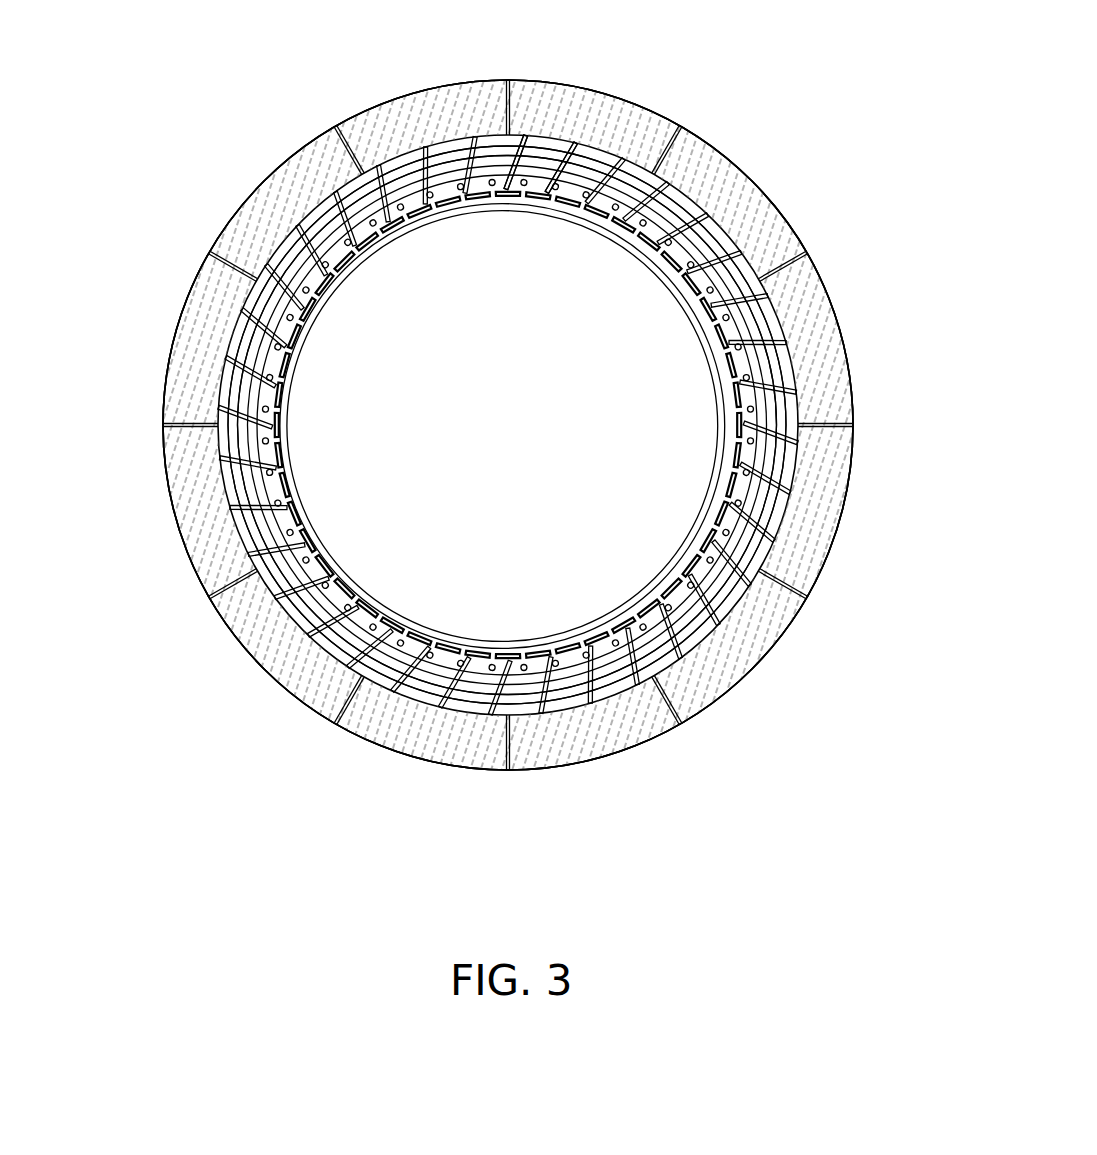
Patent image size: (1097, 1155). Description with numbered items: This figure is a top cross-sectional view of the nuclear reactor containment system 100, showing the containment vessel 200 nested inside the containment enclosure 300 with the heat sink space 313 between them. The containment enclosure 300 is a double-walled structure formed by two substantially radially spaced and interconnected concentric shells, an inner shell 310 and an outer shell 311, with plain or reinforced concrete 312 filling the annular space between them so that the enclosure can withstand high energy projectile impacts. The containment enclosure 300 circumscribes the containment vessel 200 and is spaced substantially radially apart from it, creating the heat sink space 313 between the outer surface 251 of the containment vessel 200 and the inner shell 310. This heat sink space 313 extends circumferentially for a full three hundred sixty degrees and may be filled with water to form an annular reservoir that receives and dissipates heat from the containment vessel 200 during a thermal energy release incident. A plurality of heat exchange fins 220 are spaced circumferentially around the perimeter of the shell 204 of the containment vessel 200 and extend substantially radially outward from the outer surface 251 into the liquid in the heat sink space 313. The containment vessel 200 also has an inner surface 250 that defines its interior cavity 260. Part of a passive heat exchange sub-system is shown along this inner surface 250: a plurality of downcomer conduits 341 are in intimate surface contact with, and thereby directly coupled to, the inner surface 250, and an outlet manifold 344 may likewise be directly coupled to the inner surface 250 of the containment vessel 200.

The nuclear reactor containment system 100 is at (251, 84).
The containment vessel 200 is at (582, 640).
The shell 204 is at (688, 607).
The heat exchange fins 220 is at (372, 182).
The inner surface 250 is at (517, 187).
The outer surface 251 is at (579, 197).
The interior cavity 260 is at (481, 331).
The containment enclosure 300 is at (479, 425).
The inner shell 310 is at (258, 272).
The outer shell 311 is at (177, 327).
The concrete 312 is at (215, 302).
The heat sink space 313 is at (259, 524).
The downcomer conduit 341 is at (653, 248).
The outlet manifold 344 is at (425, 634).